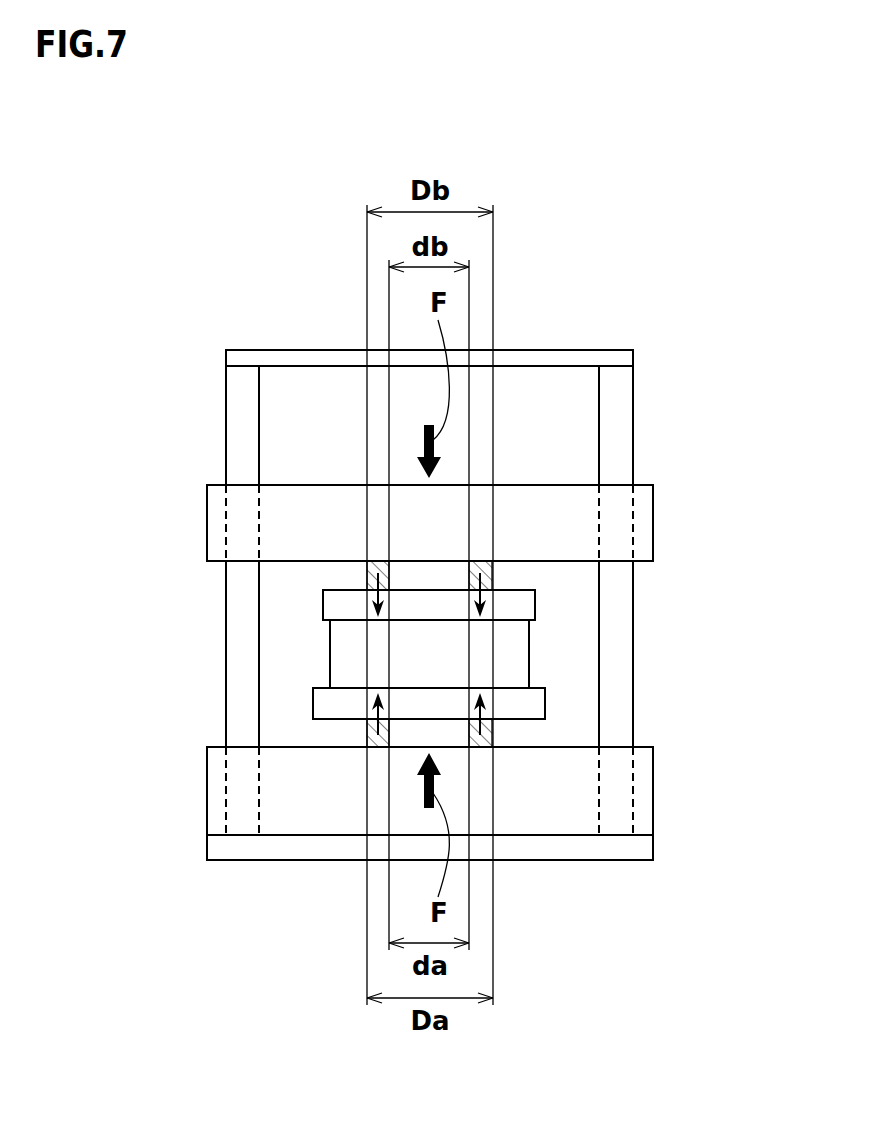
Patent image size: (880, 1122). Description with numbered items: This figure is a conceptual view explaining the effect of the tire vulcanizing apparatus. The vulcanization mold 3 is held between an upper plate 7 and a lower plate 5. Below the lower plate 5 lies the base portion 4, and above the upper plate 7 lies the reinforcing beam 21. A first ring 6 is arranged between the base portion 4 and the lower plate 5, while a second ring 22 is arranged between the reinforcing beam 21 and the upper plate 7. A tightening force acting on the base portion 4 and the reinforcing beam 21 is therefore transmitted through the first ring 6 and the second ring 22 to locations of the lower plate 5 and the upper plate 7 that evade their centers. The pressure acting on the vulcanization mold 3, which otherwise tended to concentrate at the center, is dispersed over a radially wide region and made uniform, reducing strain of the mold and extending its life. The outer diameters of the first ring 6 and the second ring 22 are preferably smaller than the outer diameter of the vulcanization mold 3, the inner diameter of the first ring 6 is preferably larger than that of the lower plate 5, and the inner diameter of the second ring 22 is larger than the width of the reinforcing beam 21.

The reinforcing beam 21 is at (559, 484).
The second ring 22 is at (492, 580).
The upper plate 7 is at (537, 603).
The vulcanization mold 3 is at (530, 654).
The lower plate 5 is at (545, 705).
The first ring 6 is at (493, 738).
The base portion 4 is at (653, 802).